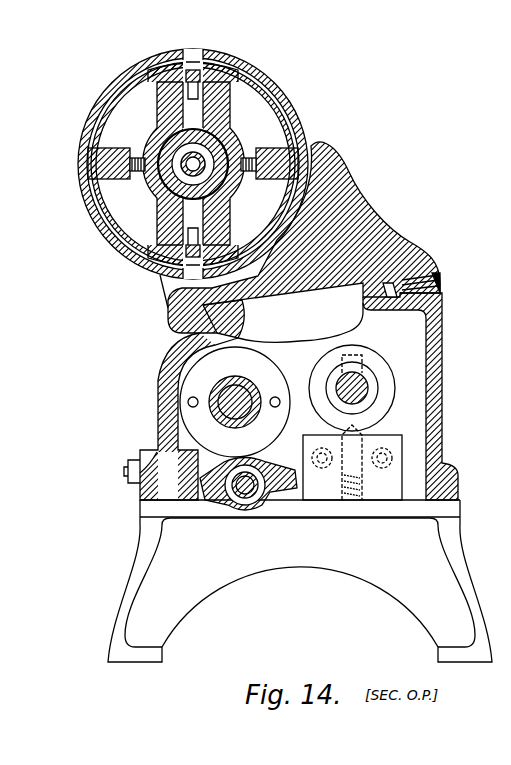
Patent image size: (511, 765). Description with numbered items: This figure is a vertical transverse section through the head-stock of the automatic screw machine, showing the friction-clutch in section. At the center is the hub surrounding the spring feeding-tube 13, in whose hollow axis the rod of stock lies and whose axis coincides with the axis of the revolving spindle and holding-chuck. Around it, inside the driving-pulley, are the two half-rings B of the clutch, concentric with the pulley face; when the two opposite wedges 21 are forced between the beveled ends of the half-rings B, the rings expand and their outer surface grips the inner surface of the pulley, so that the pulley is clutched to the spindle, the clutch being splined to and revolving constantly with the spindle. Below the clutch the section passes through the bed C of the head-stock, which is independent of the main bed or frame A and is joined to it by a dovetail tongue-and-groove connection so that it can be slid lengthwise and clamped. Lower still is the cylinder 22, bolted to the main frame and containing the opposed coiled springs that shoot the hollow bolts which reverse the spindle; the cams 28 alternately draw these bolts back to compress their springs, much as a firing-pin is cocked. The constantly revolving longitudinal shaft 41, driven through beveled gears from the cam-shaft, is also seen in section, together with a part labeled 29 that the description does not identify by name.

The spring feeding-tube 13 is at (165, 194).
The wedges 21 is at (200, 62).
The cylinder 22 is at (270, 498).
The cams 28 is at (235, 402).
The shaft bearing 29 is at (372, 391).
The longitudinal shaft 41 is at (222, 394).
The main bed or frame A is at (356, 459).
The half-rings B is at (92, 98).
The bed C is at (368, 220).